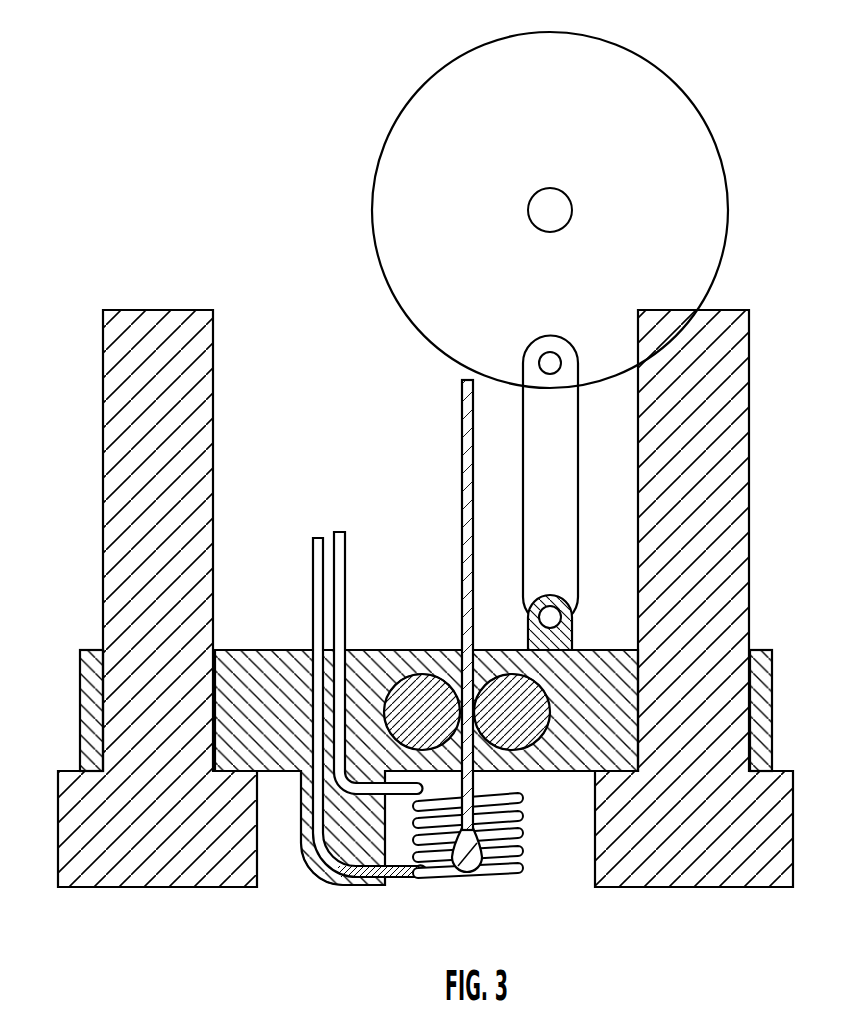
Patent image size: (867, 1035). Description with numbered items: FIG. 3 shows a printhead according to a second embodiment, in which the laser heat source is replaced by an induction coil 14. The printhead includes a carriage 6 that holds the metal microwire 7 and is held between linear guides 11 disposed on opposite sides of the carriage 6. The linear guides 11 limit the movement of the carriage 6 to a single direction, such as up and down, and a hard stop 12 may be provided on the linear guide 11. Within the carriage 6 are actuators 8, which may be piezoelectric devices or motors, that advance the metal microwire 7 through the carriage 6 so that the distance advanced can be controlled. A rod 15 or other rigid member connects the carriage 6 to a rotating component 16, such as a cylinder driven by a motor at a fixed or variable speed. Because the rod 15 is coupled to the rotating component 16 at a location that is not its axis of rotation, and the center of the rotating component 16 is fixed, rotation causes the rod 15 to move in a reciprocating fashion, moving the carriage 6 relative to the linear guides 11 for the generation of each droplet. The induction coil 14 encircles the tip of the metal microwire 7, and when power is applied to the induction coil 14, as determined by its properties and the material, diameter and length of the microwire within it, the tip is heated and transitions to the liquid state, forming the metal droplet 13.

The carriage 6 is at (602, 690).
The metal microwire 7 is at (467, 502).
The actuators 8 is at (533, 698).
The linear guides 11 is at (142, 528).
The hard stop 12 is at (87, 771).
The metal droplet 13 is at (474, 860).
The induction coil 14 is at (387, 884).
The rod 15 is at (522, 437).
The rotating component 16 is at (633, 63).